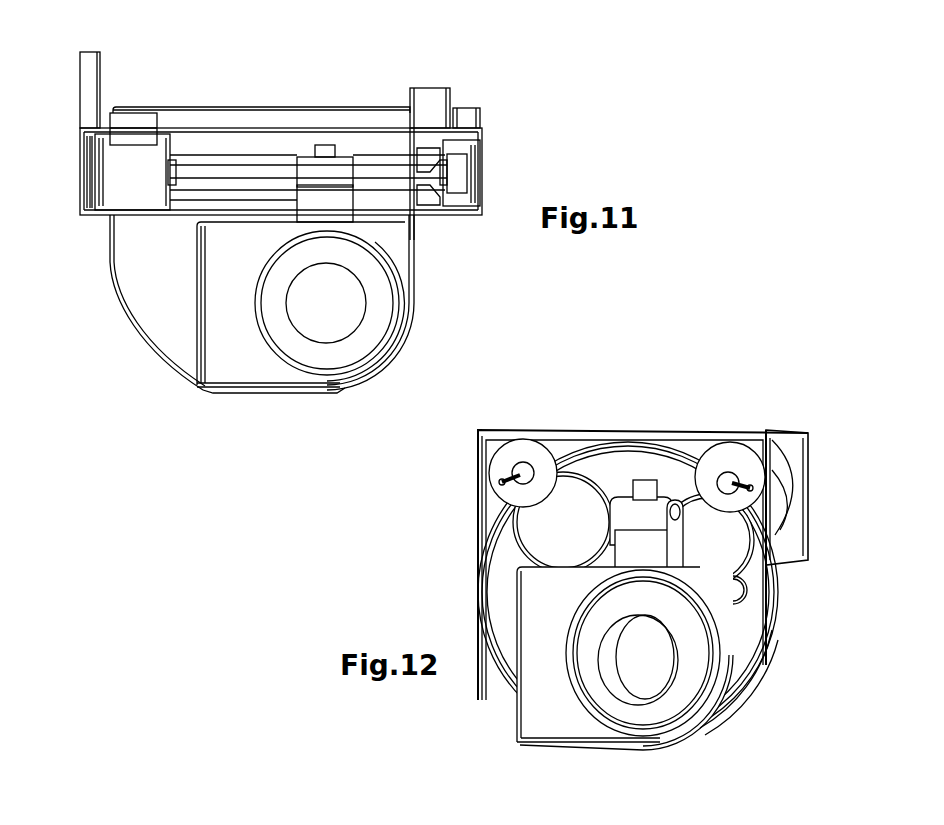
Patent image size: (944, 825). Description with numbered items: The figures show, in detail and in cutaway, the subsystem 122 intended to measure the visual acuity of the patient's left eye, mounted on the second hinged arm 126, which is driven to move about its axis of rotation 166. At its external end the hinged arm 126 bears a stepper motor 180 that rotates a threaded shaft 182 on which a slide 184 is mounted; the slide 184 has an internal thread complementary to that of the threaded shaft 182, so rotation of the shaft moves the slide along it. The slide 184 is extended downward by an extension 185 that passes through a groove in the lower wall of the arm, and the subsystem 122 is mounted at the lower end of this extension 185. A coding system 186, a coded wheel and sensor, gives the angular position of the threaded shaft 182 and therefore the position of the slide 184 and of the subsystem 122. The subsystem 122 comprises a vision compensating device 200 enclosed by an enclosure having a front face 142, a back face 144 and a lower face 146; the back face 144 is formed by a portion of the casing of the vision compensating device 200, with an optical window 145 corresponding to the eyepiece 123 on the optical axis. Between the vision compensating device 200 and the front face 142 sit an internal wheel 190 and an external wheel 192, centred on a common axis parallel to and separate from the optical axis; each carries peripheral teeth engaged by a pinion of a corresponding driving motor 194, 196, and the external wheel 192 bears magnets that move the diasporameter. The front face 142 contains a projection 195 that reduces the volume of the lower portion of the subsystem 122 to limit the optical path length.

In FIG. 11, the subsystem 122 is at (236, 405).
In FIG. 12, the subsystem 122 is at (590, 400).
In FIG. 11, the eyepiece 123 is at (340, 285).
In FIG. 12, the eyepiece 123 is at (646, 642).
In FIG. 11, the second hinged arm 126 is at (394, 143).
In FIG. 12, the front face 142 is at (764, 714).
In FIG. 11, the back face 144 is at (261, 368).
In FIG. 12, the back face 144 is at (532, 713).
In FIG. 11, the optical window 145 is at (390, 323).
In FIG. 12, the optical window 145 is at (583, 710).
In FIG. 12, the lower face 146 is at (642, 748).
In FIG. 11, the axis of rotation 166 is at (90, 70).
In FIG. 11, the motor 180 is at (140, 192).
In FIG. 11, the threaded shaft 182 is at (233, 170).
In FIG. 11, the slide 184 is at (307, 167).
In FIG. 12, the slide 184 is at (622, 510).
In FIG. 11, the extension 185 is at (345, 198).
In FIG. 12, the extension 185 is at (627, 547).
In FIG. 11, the coding system 186 is at (457, 170).
In FIG. 12, the internal wheel 190 is at (507, 555).
In FIG. 12, the external wheel 192 is at (770, 515).
In FIG. 12, the driving motor 194 is at (503, 458).
In FIG. 12, the projection 195 is at (787, 565).
In FIG. 12, the driving motor 196 is at (727, 453).
In FIG. 11, the vision compensating device 200 is at (393, 356).
In FIG. 12, the vision compensating device 200 is at (520, 742).